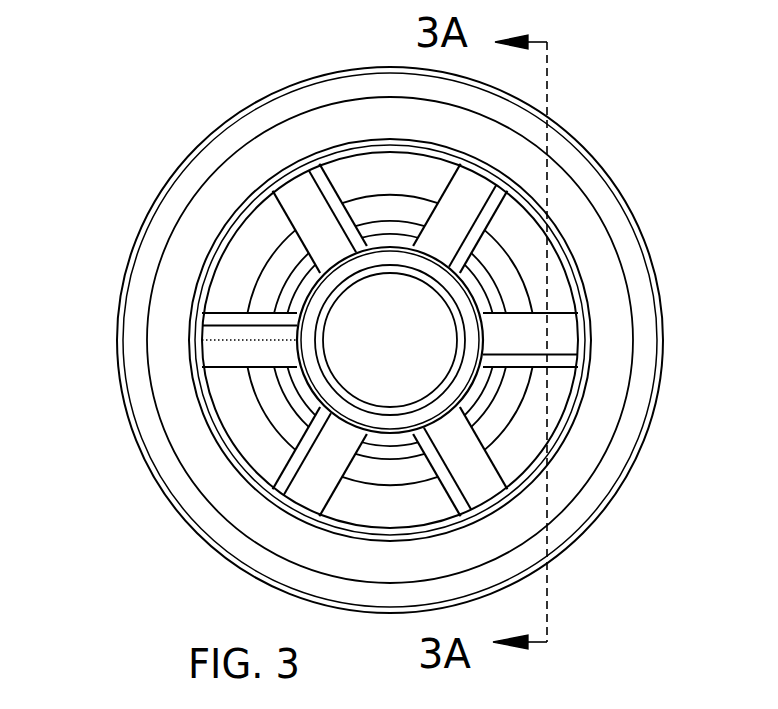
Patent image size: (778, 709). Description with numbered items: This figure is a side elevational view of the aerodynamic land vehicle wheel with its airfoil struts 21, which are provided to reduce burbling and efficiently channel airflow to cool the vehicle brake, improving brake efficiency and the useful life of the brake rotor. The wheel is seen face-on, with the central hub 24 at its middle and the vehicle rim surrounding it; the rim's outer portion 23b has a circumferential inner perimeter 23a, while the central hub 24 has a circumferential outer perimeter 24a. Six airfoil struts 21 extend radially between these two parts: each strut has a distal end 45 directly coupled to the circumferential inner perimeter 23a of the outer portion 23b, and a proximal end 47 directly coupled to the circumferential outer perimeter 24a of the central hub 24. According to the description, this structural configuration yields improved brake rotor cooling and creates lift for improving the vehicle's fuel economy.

The airfoil strut 21 is at (308, 190).
The circumferential inner perimeter 23a is at (334, 148).
The outer portion 23b is at (273, 133).
The central hub 24 is at (470, 333).
The circumferential outer perimeter 24a is at (394, 250).
The distal end 45 is at (309, 189).
The proximal end 47 is at (330, 255).